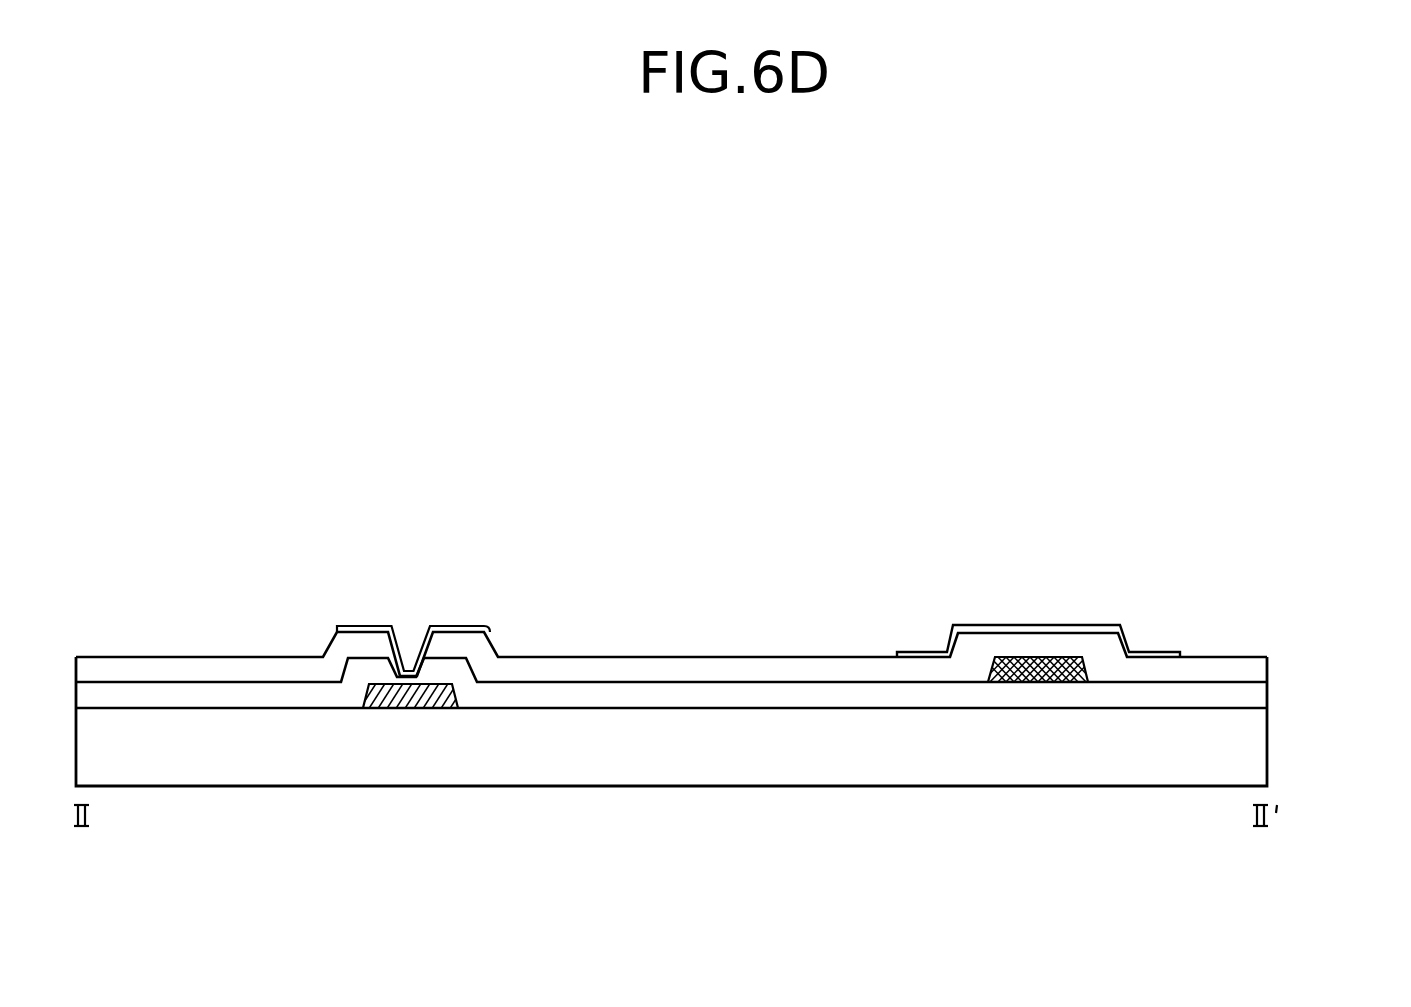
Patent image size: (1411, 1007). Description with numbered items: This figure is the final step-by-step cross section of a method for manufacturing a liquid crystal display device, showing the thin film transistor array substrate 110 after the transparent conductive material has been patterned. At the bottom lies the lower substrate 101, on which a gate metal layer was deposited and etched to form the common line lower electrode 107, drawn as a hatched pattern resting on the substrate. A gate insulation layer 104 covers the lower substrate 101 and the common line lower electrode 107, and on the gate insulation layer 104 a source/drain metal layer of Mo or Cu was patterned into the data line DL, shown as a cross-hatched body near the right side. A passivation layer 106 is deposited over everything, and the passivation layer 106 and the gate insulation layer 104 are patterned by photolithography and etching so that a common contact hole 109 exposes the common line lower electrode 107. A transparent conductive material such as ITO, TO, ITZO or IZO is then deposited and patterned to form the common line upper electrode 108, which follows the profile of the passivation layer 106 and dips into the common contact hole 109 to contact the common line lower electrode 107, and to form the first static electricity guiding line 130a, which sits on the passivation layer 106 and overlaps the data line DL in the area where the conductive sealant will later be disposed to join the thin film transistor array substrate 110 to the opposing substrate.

The lower substrate 101 is at (1260, 745).
The gate insulation layer 104 is at (1260, 698).
The passivation layer 106 is at (1260, 666).
The common line lower electrode 107 is at (383, 697).
The common line upper electrode 108 is at (475, 627).
The common contact hole 109 is at (407, 648).
The thin film transistor array substrate 110 is at (739, 705).
The first static electricity guiding line 130a is at (1150, 657).
The data line DL is at (1028, 682).